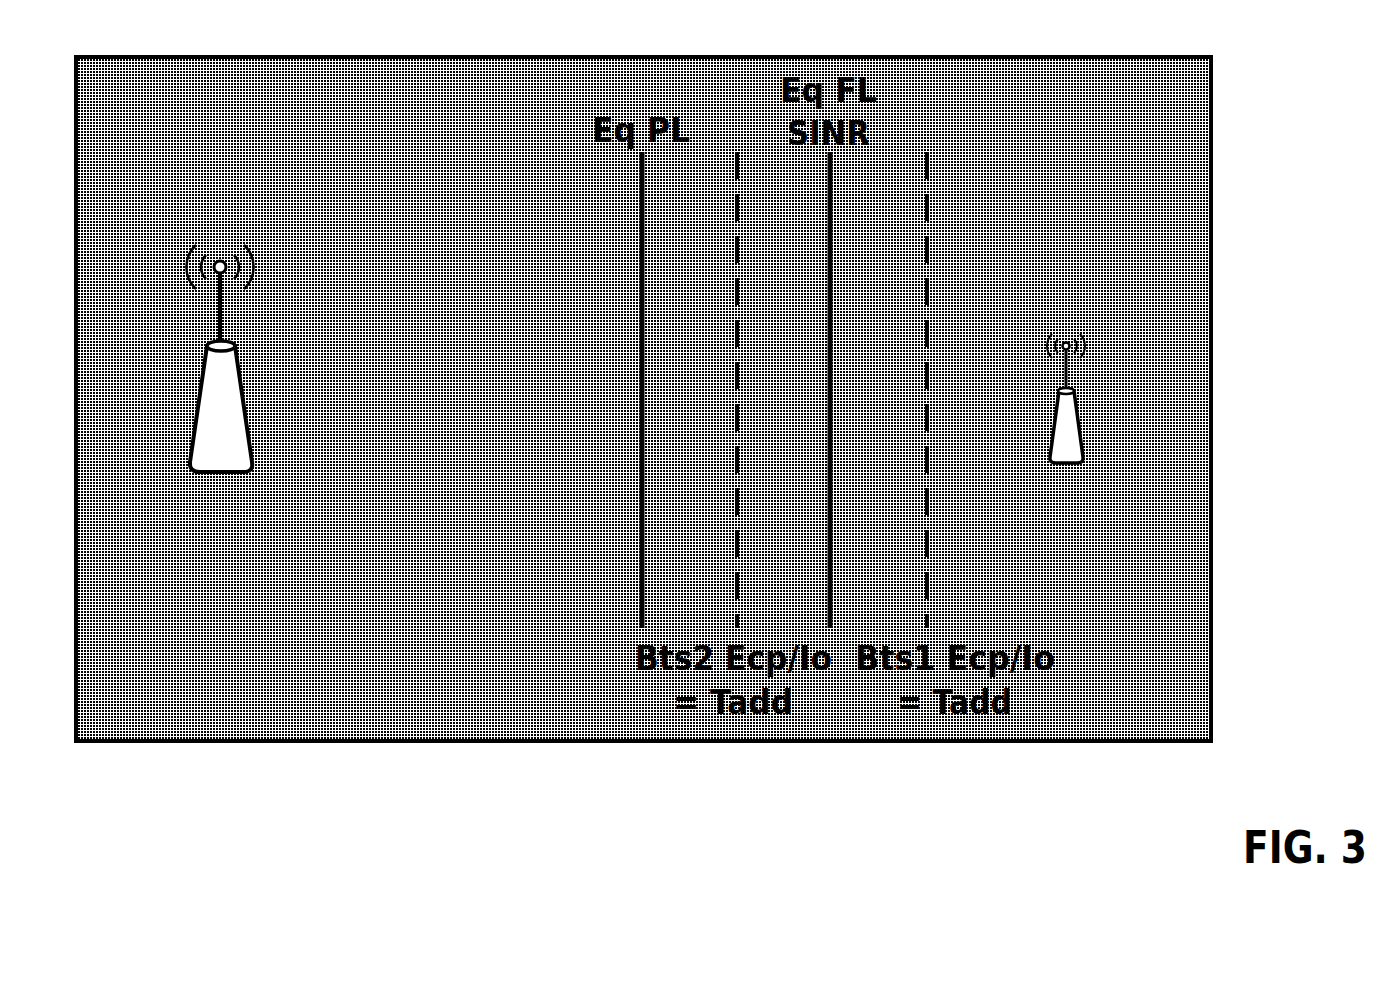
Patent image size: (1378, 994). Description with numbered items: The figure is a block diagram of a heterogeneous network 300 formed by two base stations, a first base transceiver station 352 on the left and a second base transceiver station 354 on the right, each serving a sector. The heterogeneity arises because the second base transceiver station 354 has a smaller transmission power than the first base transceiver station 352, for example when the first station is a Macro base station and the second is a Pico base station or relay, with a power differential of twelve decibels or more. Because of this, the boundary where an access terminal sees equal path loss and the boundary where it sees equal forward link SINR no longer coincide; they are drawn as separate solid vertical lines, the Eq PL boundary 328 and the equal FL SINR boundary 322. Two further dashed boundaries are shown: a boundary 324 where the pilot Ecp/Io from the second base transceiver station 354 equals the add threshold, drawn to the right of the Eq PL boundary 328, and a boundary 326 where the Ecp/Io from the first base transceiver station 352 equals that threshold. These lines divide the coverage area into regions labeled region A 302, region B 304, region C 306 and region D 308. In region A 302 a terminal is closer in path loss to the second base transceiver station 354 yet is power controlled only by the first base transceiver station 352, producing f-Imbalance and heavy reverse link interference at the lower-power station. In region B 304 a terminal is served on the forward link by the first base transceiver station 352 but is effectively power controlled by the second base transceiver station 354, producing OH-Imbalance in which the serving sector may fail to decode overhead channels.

The heterogeneous network 300 is at (1281, 31).
The region A 302 is at (690, 221).
The region B 304 is at (782, 221).
The region C 306 is at (885, 221).
The region D 308 is at (977, 221).
The equal FL SINR boundary 322 is at (836, 390).
The boundary where Ecp/Io from BTS 2 equals Tadd 324 is at (744, 390).
The boundary where Ecp/Io from BTS 1 equals Tadd 326 is at (928, 390).
The Eq PL boundary 328 is at (634, 390).
The BTS 1 352 is at (220, 409).
The BTS 2 354 is at (1068, 441).